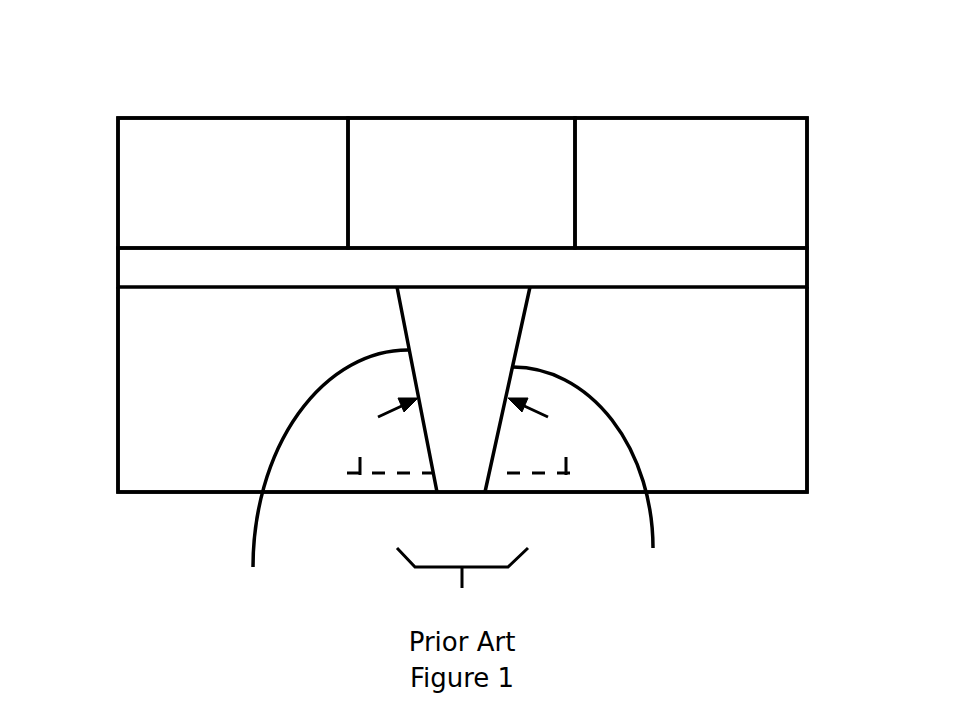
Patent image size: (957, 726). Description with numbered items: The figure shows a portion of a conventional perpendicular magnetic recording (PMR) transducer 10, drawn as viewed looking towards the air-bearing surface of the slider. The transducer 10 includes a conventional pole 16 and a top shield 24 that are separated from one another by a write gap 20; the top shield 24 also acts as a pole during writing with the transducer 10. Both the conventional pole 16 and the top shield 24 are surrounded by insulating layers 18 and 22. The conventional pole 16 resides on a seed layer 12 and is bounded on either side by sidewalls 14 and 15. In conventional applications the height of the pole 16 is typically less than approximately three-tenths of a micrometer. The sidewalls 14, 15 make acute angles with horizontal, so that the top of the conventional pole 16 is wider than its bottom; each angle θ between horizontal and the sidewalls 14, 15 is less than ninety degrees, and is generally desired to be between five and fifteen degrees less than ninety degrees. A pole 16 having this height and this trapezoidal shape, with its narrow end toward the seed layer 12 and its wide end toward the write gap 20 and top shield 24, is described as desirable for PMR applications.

The perpendicular magnetic recording transducer 10 is at (447, 57).
The seed layer 12 is at (477, 492).
The sidewall 14 is at (323, 475).
The sidewall 15 is at (591, 473).
The conventional pole 16 is at (462, 583).
The insulating layer 18 is at (118, 394).
The write gap 20 is at (118, 268).
The insulating layer 22 is at (118, 126).
The top shield 24 is at (482, 118).